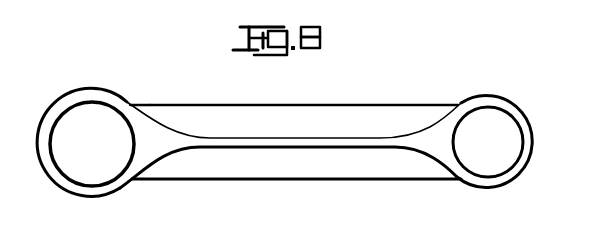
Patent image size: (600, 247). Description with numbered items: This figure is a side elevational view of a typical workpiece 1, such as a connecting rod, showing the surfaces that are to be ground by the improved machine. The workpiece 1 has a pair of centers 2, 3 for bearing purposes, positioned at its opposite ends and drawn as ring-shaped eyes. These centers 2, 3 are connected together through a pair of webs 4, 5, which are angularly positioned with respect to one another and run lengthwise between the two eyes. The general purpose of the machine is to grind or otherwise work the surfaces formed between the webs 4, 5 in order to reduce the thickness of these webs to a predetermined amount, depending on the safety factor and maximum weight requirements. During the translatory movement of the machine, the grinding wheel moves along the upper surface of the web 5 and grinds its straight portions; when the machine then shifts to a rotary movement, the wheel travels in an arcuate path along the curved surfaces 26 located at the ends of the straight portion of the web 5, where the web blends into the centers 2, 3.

The workpiece 1 is at (367, 104).
The center 2 is at (81, 118).
The center 3 is at (508, 126).
The web 4 is at (275, 113).
The web 5 is at (282, 147).
The curved surface 26 is at (142, 113).